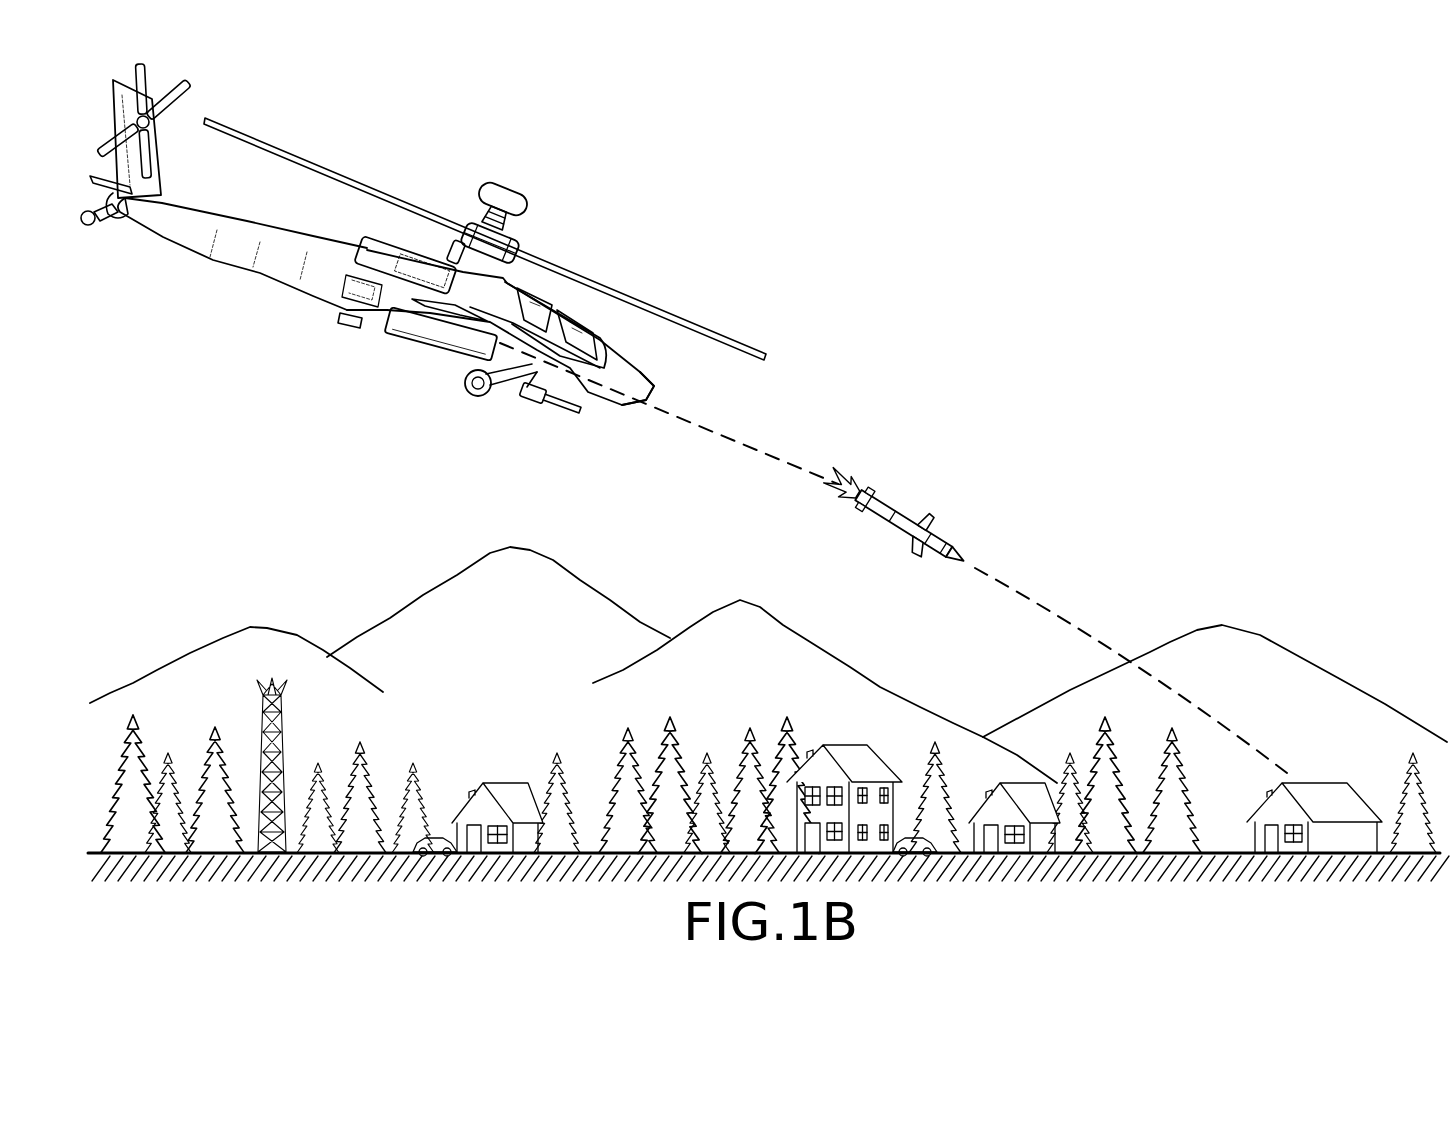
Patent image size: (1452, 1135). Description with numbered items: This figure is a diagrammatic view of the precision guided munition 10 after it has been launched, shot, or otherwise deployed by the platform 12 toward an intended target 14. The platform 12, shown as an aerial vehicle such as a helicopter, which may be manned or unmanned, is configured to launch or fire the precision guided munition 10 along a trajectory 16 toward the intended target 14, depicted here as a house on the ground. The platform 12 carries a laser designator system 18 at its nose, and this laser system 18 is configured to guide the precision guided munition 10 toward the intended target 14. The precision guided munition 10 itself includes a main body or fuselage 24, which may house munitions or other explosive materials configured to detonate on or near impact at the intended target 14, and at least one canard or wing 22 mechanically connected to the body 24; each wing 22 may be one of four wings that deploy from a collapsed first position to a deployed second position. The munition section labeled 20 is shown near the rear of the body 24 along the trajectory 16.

The precision guided munition 10 is at (932, 489).
The platform 12 is at (257, 278).
The intended target 14 is at (1320, 793).
The trajectory 16 is at (1047, 612).
The laser designator system 18 is at (656, 388).
The projectile body 20 is at (879, 491).
The wing 22 is at (927, 521).
The main body 24 is at (886, 528).